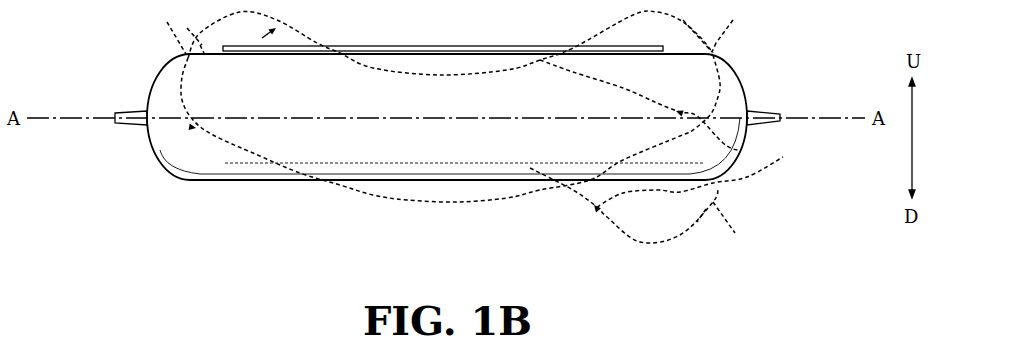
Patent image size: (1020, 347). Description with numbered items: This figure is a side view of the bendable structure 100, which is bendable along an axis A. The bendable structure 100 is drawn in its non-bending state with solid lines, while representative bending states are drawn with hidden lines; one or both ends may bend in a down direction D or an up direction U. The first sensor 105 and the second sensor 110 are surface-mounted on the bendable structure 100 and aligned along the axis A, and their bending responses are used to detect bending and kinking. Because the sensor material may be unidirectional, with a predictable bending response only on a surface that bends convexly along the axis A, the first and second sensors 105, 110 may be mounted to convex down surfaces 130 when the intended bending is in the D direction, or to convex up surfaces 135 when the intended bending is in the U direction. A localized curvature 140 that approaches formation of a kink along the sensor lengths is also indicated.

The bendable structure 100 is at (193, 180).
The first sensor 105 is at (443, 32).
The second sensor 110 is at (350, 46).
The convex down surfaces 130 is at (738, 150).
The convex up surfaces 135 is at (180, 55).
The localized curvature 140 is at (557, 204).